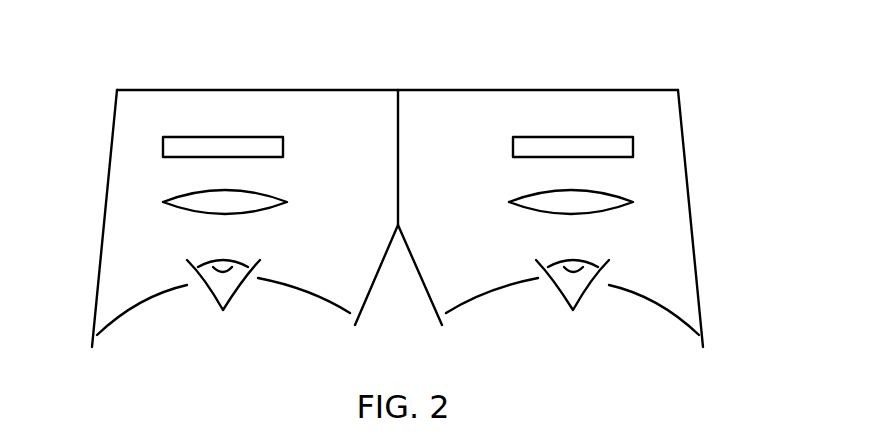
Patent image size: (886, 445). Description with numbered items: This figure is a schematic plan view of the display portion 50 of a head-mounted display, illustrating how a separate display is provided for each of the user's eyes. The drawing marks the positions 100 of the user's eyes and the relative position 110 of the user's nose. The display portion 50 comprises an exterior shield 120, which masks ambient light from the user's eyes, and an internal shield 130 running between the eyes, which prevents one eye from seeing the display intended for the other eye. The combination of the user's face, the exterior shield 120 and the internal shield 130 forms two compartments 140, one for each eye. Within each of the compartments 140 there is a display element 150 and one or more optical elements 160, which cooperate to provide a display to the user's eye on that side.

The display portion 50 is at (663, 89).
The positions of the user's eyes 100 is at (231, 289).
The relative position of the user's nose 110 is at (422, 272).
The exterior shield 120 is at (473, 89).
The internal shield 130 is at (399, 167).
The compartments 140 is at (270, 110).
The display element 150 is at (182, 147).
The optical elements 160 is at (163, 202).